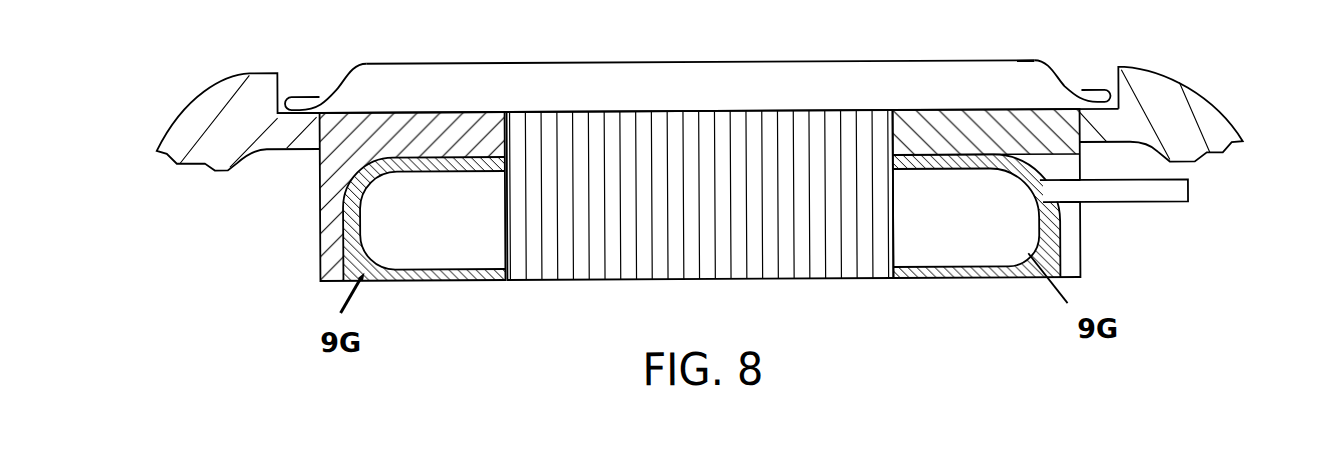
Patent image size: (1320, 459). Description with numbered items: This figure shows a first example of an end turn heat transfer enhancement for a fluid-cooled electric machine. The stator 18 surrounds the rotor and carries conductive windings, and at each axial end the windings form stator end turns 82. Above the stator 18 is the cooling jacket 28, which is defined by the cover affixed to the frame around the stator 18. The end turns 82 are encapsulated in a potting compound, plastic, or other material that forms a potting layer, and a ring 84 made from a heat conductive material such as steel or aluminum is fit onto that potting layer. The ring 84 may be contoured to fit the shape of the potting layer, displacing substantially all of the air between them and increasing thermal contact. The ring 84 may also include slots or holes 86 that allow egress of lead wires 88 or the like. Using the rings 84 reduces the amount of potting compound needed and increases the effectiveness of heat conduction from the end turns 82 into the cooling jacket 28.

The cooling jacket 28 is at (681, 59).
The stator 18 is at (655, 240).
The ring 84 is at (320, 198).
The stator end turns 82 is at (447, 250).
The slots or holes 86 is at (1082, 205).
The lead wires 88 is at (1188, 192).